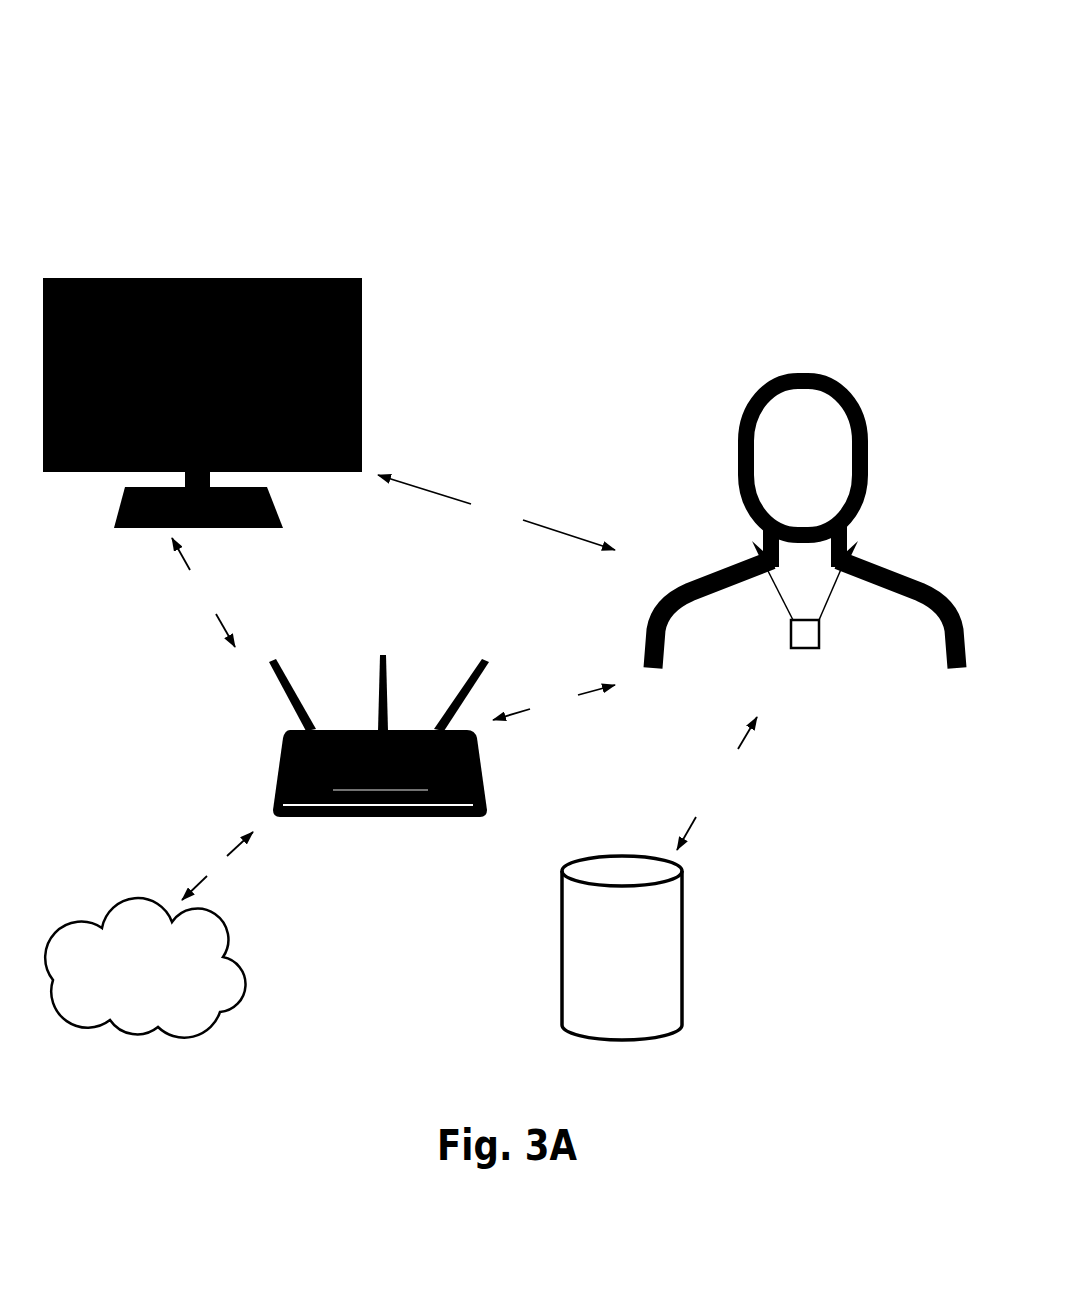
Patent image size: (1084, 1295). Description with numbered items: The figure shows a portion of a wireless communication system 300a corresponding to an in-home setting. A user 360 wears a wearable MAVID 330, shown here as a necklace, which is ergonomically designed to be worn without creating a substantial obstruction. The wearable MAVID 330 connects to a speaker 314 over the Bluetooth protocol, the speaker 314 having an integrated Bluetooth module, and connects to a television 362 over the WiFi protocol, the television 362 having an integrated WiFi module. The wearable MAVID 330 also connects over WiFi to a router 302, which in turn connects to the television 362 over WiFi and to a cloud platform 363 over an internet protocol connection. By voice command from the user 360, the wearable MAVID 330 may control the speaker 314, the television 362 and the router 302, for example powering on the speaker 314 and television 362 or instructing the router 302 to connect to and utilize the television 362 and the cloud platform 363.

The wireless communication system 300a is at (764, 72).
The television 362 is at (335, 277).
The user 360 is at (830, 373).
The wearable MAVID 330 is at (903, 535).
The router 302 is at (272, 662).
The speaker 314 is at (645, 853).
The cloud platform 363 is at (87, 925).